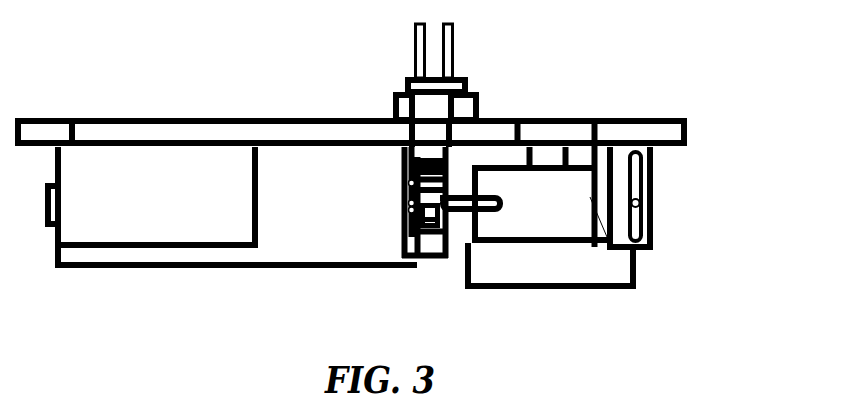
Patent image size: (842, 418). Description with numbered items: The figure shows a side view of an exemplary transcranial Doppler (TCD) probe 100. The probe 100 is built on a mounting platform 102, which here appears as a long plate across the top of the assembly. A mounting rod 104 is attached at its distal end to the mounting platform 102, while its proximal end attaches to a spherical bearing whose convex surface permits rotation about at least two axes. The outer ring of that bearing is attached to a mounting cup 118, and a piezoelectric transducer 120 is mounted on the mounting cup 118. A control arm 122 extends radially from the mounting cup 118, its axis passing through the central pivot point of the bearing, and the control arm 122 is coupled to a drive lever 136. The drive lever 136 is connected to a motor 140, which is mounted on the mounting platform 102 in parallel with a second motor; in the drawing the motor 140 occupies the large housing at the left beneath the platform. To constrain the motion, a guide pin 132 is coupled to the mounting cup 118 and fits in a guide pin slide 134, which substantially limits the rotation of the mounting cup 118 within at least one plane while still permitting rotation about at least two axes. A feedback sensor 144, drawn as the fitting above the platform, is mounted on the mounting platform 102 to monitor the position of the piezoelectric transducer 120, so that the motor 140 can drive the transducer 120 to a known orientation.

The transcranial Doppler probe 100 is at (697, 91).
The mounting platform 102 is at (143, 120).
The mounting rod 104 is at (552, 155).
The mounting cup 118 is at (520, 217).
The piezoelectric transducer 120 is at (583, 263).
The control arm 122 is at (473, 200).
The guide pin 132 is at (633, 202).
The guide pin slide 134 is at (647, 218).
The drive lever 136 is at (427, 247).
The motor 140 is at (143, 255).
The feedback sensor 144 is at (437, 92).